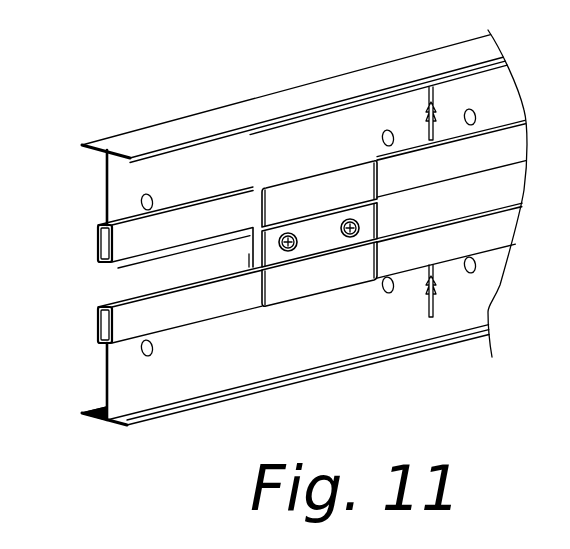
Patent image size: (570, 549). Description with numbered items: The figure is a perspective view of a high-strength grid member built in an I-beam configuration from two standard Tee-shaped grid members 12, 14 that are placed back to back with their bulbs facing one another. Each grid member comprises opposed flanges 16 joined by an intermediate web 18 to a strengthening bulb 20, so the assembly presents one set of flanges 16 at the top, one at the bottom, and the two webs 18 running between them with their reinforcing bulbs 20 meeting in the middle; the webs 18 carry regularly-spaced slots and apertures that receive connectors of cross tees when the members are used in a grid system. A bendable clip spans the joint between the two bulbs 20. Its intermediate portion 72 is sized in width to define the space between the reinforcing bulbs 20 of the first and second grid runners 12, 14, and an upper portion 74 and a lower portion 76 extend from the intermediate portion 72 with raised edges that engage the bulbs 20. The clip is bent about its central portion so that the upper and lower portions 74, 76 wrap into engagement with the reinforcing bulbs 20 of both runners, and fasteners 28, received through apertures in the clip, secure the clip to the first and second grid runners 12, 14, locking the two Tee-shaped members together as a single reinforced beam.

The Tee-shaped grid member 12 is at (107, 358).
The Tee-shaped grid member 14 is at (107, 193).
The flange 16 is at (82, 147).
The web 18 is at (253, 166).
The strengthening bulb 20 is at (97, 239).
The fastener 28 is at (279, 243).
The intermediate portion 72 is at (334, 240).
The upper portion 74 is at (305, 285).
The lower portion 76 is at (325, 188).